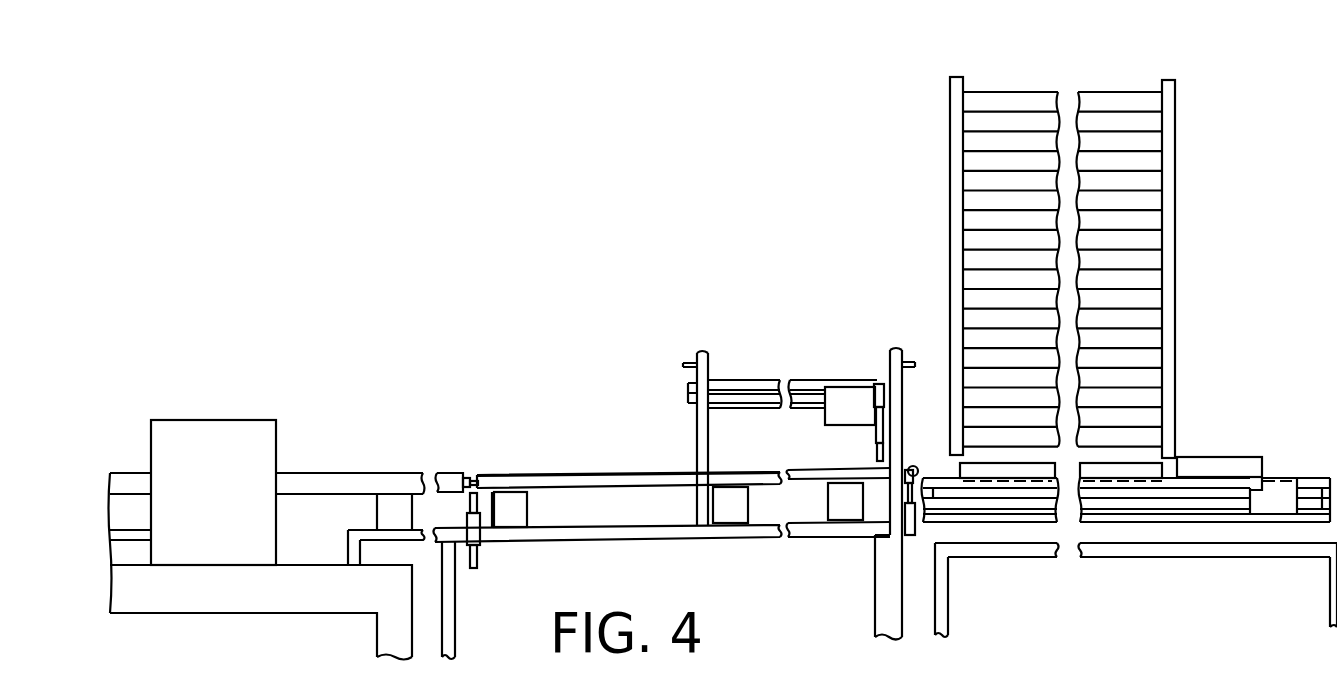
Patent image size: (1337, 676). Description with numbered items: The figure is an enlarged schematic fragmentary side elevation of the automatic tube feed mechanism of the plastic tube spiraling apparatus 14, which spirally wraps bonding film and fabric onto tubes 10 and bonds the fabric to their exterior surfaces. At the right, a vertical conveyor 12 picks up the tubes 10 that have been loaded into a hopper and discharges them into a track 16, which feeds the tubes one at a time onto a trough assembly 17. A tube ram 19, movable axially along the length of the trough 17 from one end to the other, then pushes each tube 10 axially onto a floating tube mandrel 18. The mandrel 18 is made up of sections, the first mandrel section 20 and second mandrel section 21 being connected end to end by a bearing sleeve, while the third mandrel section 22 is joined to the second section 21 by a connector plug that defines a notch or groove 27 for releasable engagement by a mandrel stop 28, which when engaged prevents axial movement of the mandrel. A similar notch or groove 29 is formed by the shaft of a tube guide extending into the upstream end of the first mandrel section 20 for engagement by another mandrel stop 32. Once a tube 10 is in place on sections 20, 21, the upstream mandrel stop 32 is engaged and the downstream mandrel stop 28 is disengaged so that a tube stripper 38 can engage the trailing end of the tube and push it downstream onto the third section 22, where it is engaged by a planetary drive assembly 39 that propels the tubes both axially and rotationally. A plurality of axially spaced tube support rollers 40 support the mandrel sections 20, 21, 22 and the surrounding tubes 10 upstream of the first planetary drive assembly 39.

The tubes 10 is at (357, 478).
The vertical conveyor 12 is at (1190, 166).
The plastic tube spiraling machine/apparatus 14 is at (576, 364).
The track 16 is at (1163, 358).
The trough assembly 17 is at (1168, 483).
The floating tube mandrel 18 is at (648, 458).
The tube ram 19 is at (1247, 465).
The first mandrel section 20 is at (815, 467).
The second mandrel section 21 is at (591, 475).
The third mandrel section 22 is at (467, 473).
The notch or groove 27 is at (475, 472).
The mandrel stop 28 is at (480, 503).
The notch or groove 29 is at (910, 467).
The mandrel stop 32 is at (903, 483).
The tube stripper 38 is at (875, 456).
The planetary drive assembly 39 is at (238, 432).
The tube support rollers 40 is at (519, 512).